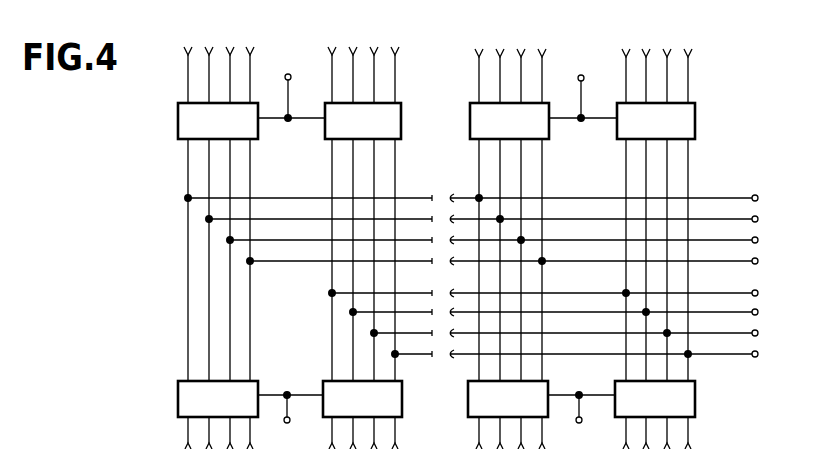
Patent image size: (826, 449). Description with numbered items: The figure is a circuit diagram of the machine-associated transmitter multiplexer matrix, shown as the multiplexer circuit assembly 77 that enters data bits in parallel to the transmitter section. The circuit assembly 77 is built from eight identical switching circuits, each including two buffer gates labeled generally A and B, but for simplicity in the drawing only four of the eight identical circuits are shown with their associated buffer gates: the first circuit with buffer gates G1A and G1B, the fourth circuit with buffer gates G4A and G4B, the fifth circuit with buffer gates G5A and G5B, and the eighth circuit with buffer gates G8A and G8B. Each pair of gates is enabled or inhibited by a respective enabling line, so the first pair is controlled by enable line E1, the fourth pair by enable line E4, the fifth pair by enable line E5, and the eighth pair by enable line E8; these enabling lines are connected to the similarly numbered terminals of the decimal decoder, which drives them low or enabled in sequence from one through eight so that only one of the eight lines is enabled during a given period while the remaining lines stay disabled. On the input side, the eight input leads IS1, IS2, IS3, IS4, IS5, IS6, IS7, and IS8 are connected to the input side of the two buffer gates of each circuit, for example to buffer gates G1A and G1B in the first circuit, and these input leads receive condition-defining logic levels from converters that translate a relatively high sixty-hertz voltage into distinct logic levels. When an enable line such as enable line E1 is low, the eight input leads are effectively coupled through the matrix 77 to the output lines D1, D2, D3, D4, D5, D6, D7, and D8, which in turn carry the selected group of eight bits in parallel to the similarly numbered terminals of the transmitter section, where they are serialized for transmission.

The multiplexer circuit assembly 77 is at (447, 177).
The enable line E1 is at (297, 66).
The enable line E4 is at (582, 75).
The enable line E5 is at (286, 423).
The enable line E8 is at (578, 423).
The input lead IS1 is at (188, 62).
The input lead IS2 is at (209, 62).
The input lead IS3 is at (230, 62).
The input lead IS4 is at (250, 62).
The input lead IS5 is at (332, 62).
The input lead IS6 is at (353, 62).
The input lead IS7 is at (374, 62).
The input lead IS8 is at (395, 62).
The output line D1 is at (489, 198).
The output line D2 is at (499, 219).
The output line D3 is at (510, 240).
The output line D4 is at (520, 261).
The output line D5 is at (561, 293).
The output line D6 is at (571, 312).
The output line D7 is at (582, 333).
The output line D8 is at (592, 354).
The buffer gate G1A is at (218, 121).
The buffer gate G1B is at (363, 121).
The buffer gate G4A is at (509, 121).
The buffer gate G4B is at (656, 121).
The buffer gate G5A is at (218, 399).
The buffer gate G5B is at (362, 399).
The buffer gate G8A is at (508, 399).
The buffer gate G8B is at (655, 399).